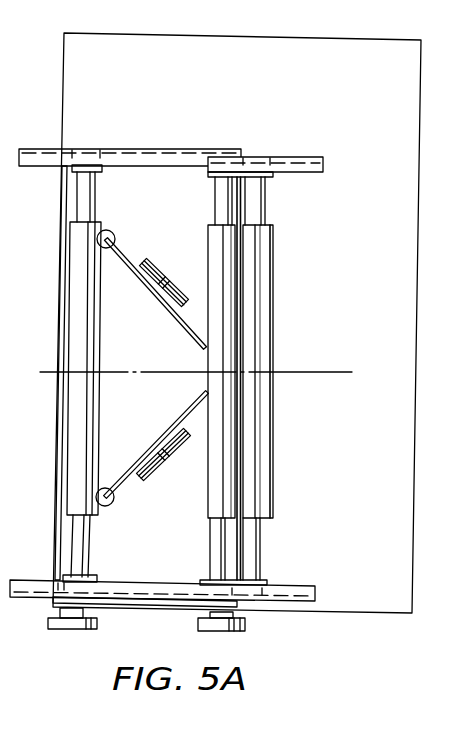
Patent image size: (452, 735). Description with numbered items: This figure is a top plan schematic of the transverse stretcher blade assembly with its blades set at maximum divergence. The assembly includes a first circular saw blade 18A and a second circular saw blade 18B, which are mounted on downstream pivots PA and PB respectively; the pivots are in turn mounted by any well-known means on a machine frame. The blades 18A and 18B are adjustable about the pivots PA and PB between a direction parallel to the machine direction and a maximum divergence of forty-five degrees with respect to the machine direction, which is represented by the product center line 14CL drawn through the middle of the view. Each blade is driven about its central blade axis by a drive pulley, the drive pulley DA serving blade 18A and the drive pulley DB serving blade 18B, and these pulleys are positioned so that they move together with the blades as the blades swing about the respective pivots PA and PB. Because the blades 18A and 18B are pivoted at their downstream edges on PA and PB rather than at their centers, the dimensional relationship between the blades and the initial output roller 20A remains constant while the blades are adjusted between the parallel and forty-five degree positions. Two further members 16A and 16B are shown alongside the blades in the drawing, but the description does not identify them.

The output roller 20A is at (80, 244).
The first cylinder 16A is at (273, 241).
The second cylinder 16B is at (228, 302).
The first circular saw blade 18A is at (137, 455).
The second circular saw blade 18B is at (116, 257).
The downstream pivot PA is at (102, 507).
The downstream pivot PB is at (101, 230).
The drive pulley DA is at (167, 458).
The drive pulley DB is at (157, 262).
The product center line 14CL is at (313, 371).